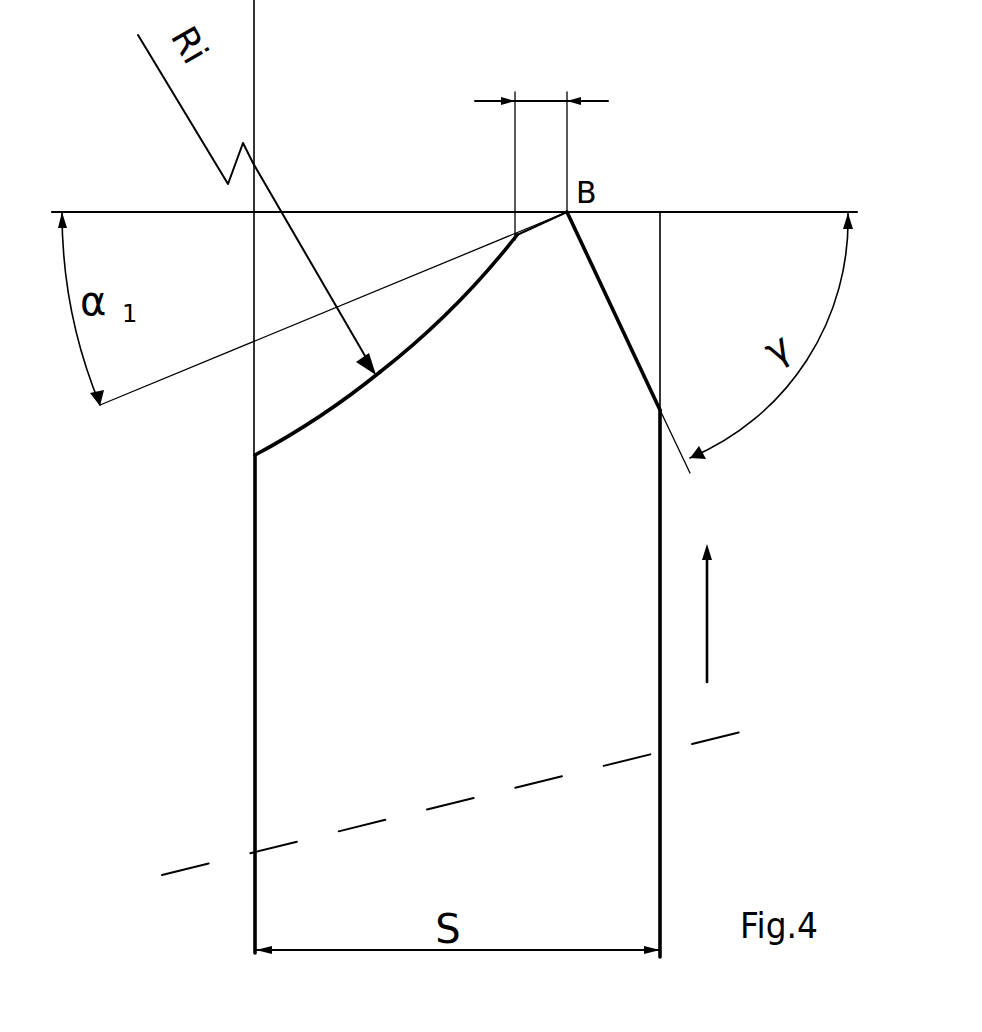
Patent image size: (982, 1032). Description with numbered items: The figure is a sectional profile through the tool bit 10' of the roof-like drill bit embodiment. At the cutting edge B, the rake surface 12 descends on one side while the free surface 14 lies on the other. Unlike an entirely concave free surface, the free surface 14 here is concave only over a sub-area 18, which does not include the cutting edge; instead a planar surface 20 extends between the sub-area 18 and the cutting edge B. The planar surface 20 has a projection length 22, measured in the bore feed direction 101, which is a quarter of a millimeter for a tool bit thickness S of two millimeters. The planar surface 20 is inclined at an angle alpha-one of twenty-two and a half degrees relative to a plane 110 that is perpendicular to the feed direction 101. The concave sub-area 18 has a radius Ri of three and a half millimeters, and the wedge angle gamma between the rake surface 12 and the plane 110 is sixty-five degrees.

The tool bit 10' is at (349, 478).
The rake surface 12 is at (626, 305).
The free surface 14 is at (422, 303).
The sub-area 18 is at (327, 413).
The planar surface 20 is at (536, 228).
The projection length 22 is at (540, 101).
The bore feed direction 101 is at (707, 628).
The plane 110 is at (763, 212).